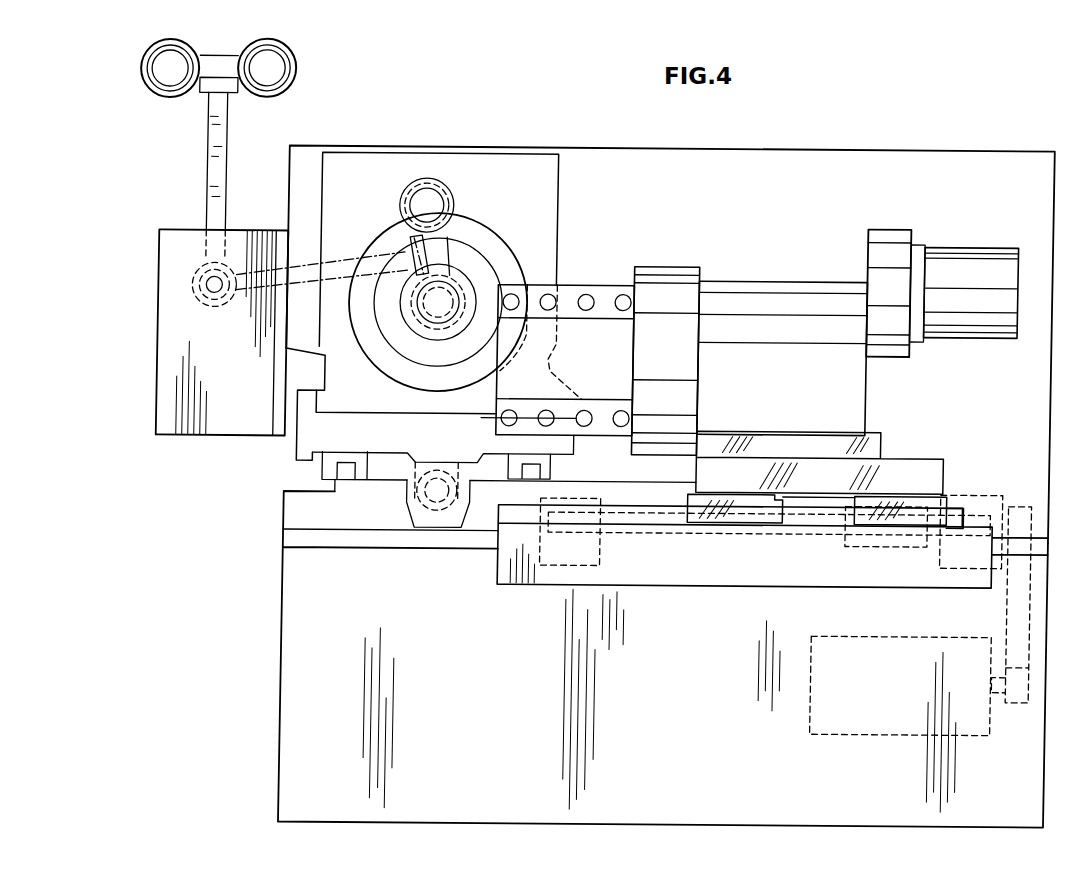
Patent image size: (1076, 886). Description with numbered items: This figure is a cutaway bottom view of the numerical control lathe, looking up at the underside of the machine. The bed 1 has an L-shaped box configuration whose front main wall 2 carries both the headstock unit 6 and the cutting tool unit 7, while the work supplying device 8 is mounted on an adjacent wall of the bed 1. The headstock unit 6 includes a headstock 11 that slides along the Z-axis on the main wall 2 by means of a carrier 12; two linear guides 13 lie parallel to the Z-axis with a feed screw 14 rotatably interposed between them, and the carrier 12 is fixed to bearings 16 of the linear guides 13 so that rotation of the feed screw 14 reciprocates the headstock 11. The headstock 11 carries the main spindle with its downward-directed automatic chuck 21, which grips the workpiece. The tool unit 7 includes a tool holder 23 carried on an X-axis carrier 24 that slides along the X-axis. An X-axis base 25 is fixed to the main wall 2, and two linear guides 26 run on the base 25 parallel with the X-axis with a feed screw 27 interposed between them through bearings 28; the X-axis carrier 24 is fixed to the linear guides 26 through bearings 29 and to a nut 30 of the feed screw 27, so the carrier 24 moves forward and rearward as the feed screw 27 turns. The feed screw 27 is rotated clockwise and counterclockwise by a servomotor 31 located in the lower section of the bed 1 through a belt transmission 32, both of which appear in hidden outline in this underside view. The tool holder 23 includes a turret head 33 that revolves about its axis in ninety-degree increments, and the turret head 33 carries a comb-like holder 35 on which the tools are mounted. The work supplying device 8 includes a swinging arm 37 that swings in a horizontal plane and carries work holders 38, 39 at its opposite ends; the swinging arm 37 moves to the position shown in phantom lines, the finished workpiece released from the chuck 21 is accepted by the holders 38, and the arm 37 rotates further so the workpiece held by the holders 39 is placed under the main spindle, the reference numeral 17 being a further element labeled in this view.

The bed 1 is at (283, 681).
The front main wall 2 is at (300, 493).
The headstock unit 6 is at (558, 189).
The cutting tool unit 7 is at (828, 260).
The work supplying device 8 is at (154, 336).
The headstock 11 is at (484, 164).
The carrier 12 is at (306, 435).
The linear guides 13 is at (343, 482).
The feed screw 14 is at (438, 532).
The bearings 16 is at (322, 478).
The pin 17 is at (406, 520).
The automatic chuck 21 is at (458, 270).
The tool holder 23 is at (772, 302).
The X-axis carrier 24 is at (905, 468).
The X-axis base 25 is at (770, 587).
The linear guides 26 is at (815, 504).
The feed screw 27 is at (653, 540).
The bearings 28 is at (575, 566).
The bearings 29 is at (729, 522).
The nut 30 is at (863, 546).
The servomotor 31 is at (883, 738).
The belt transmission 32 is at (1035, 627).
The turret head 33 is at (597, 336).
The comb-like holder 35 is at (562, 284).
The swinging arm 37 is at (210, 181).
The work holders 38 is at (286, 78).
The work holders 39 is at (141, 97).